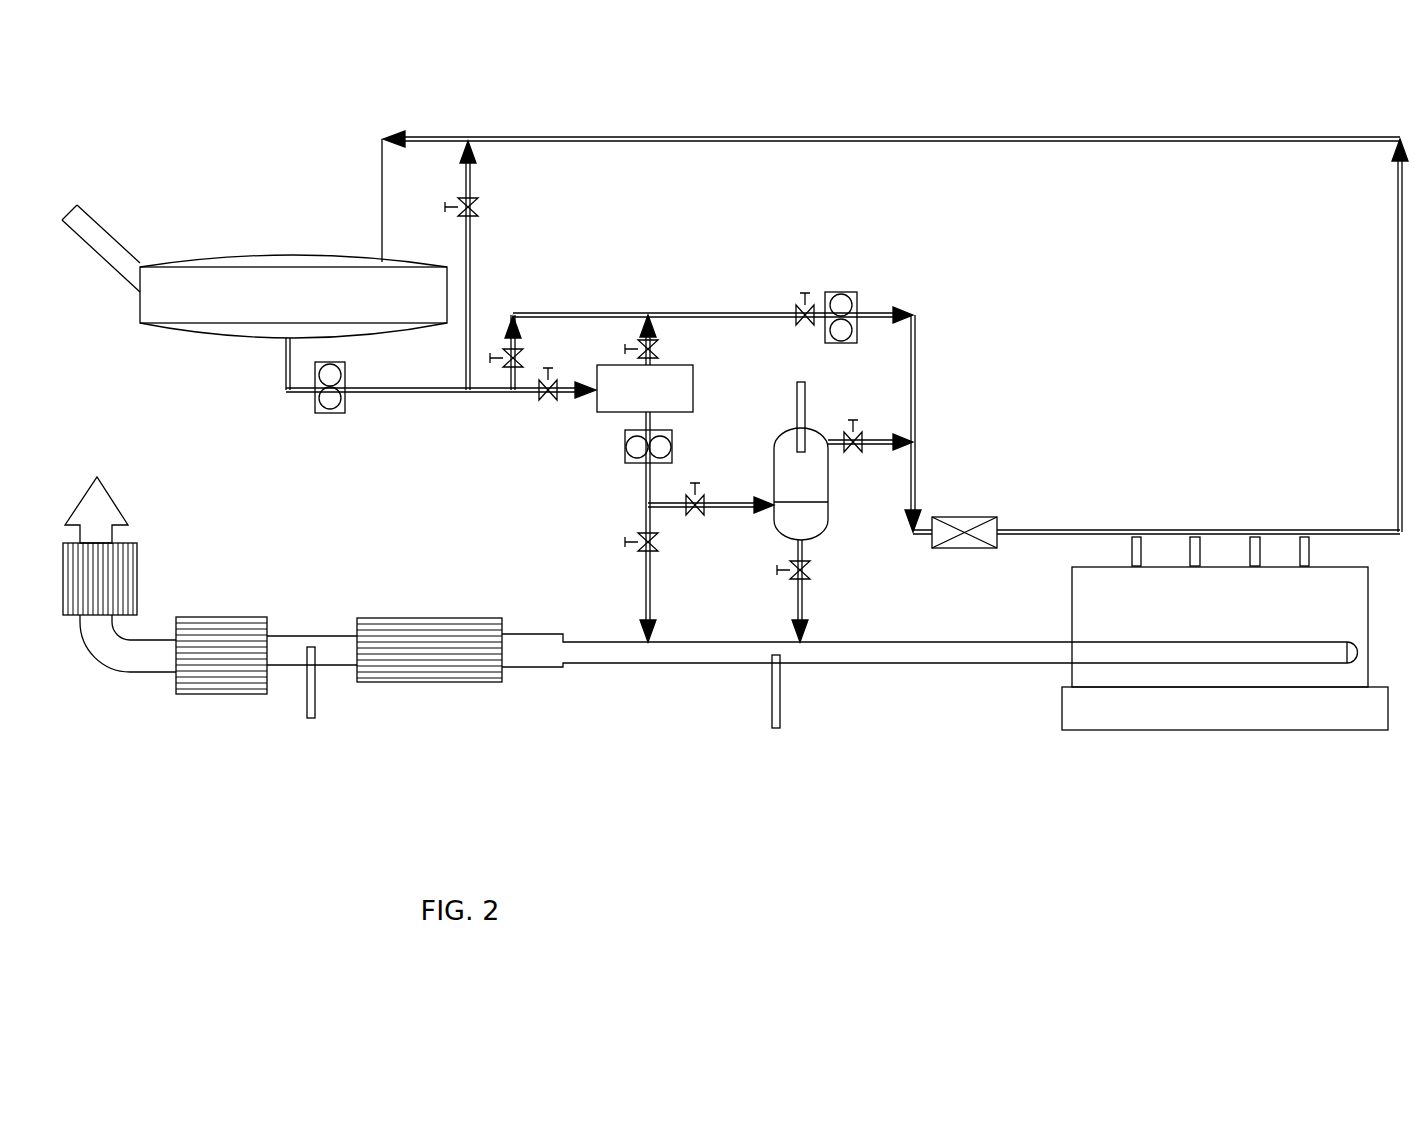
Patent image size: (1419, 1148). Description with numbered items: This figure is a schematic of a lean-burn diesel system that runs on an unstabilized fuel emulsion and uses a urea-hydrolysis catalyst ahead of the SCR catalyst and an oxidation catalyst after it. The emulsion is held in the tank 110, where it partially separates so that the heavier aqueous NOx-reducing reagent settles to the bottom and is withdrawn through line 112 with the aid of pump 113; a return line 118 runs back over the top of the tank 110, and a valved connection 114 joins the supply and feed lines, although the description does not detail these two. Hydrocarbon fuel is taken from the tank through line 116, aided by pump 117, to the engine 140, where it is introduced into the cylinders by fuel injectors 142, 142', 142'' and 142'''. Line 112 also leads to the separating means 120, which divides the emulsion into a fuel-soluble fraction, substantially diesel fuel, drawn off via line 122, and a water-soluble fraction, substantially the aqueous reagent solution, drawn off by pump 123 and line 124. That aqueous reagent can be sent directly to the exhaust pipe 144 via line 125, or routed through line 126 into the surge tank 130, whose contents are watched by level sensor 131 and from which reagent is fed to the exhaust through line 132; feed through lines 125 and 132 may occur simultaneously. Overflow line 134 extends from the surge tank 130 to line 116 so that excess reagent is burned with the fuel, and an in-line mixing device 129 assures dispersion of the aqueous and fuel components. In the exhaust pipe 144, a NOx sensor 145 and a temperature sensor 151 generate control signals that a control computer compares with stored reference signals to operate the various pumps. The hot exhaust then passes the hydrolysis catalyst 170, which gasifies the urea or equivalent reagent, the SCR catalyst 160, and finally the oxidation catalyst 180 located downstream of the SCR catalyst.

The tank 110 is at (327, 311).
The line 112 is at (445, 393).
The pump 113 is at (328, 403).
The bypass line with valves 114 is at (470, 267).
The line 116 is at (567, 315).
The pump 117 is at (840, 292).
The return line 118 is at (700, 142).
The separating means 120 is at (622, 402).
The line 122 is at (657, 330).
The pump 123 is at (625, 437).
The line 124 is at (645, 486).
The line 125 is at (643, 607).
The branch line 126 is at (658, 505).
The mixing device 129 is at (957, 517).
The surge tank 130 is at (801, 484).
The level sensor 131 is at (805, 397).
The line 132 is at (803, 553).
The overflow line 134 is at (873, 432).
The engine 140 is at (1208, 621).
The fuel injector 142 is at (1042, 570).
The fuel injector 142' is at (1138, 518).
The fuel injector 142'' is at (1202, 494).
The fuel injector 142''' is at (1264, 471).
The exhaust pipe 144 is at (925, 650).
The NOx sensor 145 is at (773, 728).
The temperature sensor 151 is at (312, 718).
The SCR catalyst 160 is at (243, 694).
The hydrolysis catalyst 170 is at (468, 682).
The oxidation catalyst 180 is at (127, 548).